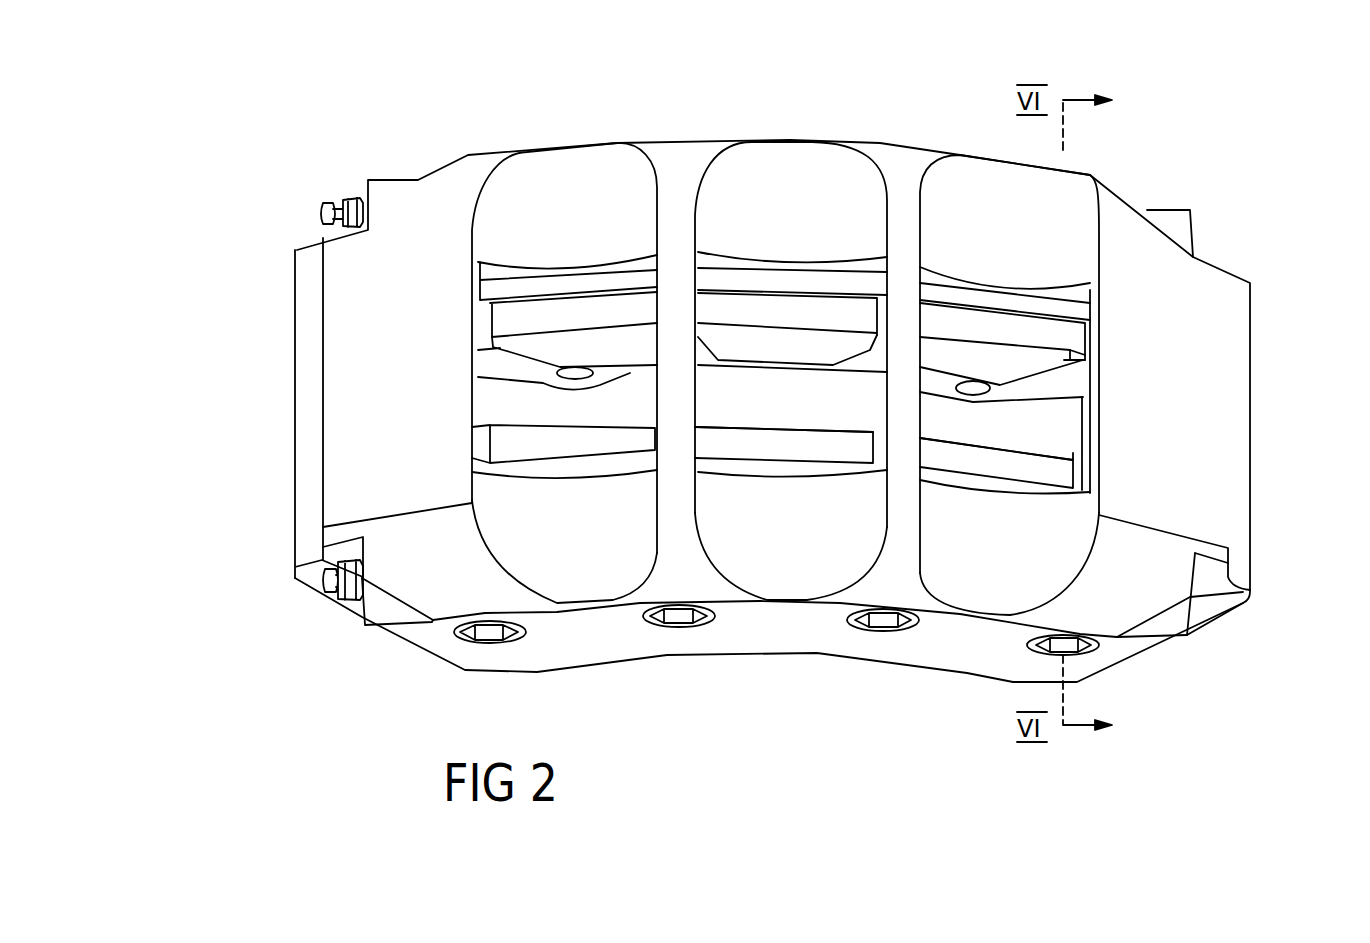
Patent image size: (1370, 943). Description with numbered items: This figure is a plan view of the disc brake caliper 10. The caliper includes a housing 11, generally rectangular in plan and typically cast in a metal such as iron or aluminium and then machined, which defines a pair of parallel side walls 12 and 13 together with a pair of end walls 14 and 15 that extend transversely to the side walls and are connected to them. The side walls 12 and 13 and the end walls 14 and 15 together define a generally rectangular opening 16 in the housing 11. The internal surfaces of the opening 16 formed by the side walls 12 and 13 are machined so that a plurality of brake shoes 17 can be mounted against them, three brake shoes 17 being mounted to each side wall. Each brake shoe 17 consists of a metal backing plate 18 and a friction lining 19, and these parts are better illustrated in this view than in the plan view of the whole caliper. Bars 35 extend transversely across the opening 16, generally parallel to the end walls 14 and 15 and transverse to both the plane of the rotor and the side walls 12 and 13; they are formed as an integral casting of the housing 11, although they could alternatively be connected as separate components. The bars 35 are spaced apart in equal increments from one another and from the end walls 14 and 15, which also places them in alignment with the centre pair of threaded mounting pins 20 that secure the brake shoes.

The disc brake caliper 10 is at (896, 94).
The housing 11 is at (648, 140).
The side wall 12 is at (708, 140).
The side wall 13 is at (840, 592).
The end wall 14 is at (290, 437).
The end wall 15 is at (1252, 456).
The opening 16 is at (1108, 348).
The brake shoe 17 is at (543, 283).
The metal backing plate 18 is at (580, 477).
The friction lining 19 is at (628, 443).
The threaded pin 20 is at (680, 618).
The bar 35 is at (680, 405).